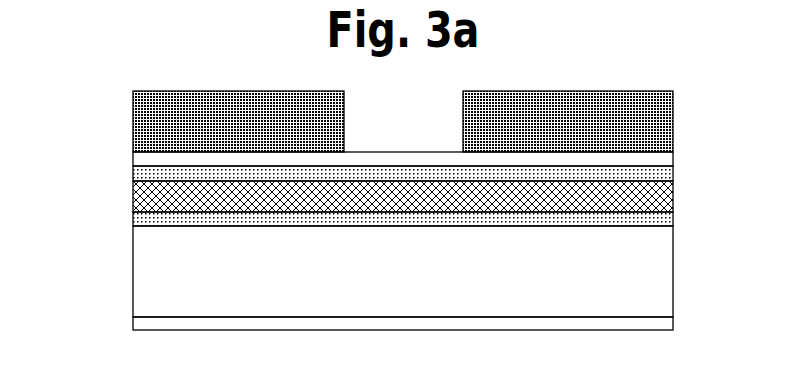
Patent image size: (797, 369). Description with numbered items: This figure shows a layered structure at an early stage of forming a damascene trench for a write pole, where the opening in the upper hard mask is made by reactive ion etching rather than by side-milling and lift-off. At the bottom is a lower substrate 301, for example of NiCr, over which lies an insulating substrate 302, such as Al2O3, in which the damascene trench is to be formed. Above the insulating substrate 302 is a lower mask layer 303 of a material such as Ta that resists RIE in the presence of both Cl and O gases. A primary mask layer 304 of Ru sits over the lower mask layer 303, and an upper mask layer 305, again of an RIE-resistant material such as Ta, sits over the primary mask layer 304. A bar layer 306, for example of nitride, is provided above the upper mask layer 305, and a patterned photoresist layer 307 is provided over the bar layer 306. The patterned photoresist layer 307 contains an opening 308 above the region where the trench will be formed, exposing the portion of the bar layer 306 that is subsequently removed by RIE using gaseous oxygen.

The lower substrate 301 is at (133, 323).
The insulating substrate 302 is at (133, 270).
The lower mask layer 303 is at (133, 218).
The primary mask layer 304 is at (133, 194).
The upper mask layer 305 is at (133, 173).
The bar layer 306 is at (673, 157).
The patterned photoresist layer 307 is at (673, 120).
The opening 308 is at (387, 130).